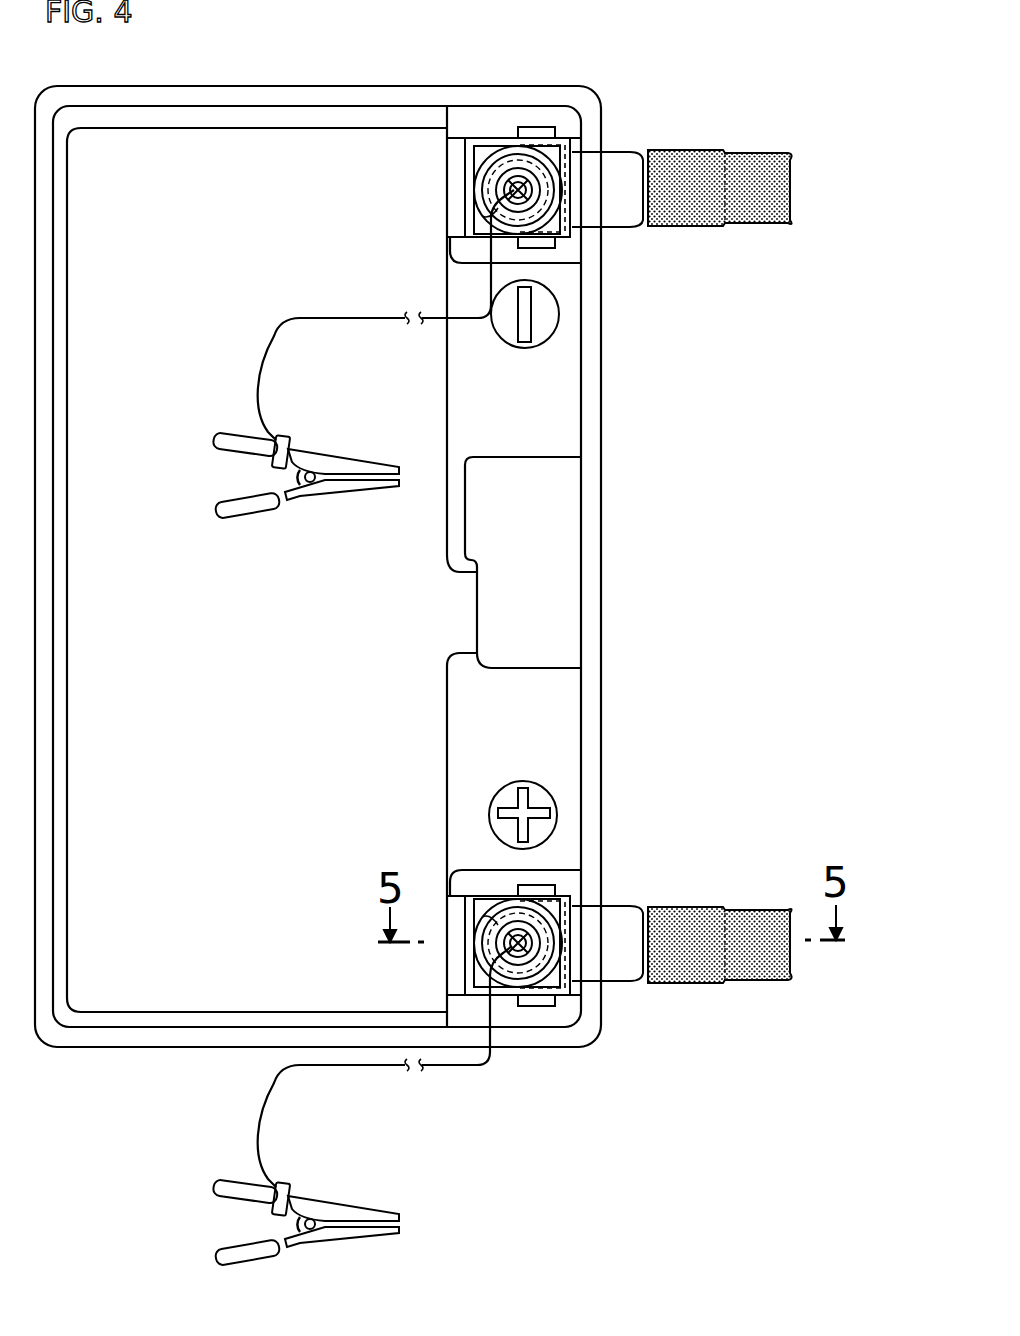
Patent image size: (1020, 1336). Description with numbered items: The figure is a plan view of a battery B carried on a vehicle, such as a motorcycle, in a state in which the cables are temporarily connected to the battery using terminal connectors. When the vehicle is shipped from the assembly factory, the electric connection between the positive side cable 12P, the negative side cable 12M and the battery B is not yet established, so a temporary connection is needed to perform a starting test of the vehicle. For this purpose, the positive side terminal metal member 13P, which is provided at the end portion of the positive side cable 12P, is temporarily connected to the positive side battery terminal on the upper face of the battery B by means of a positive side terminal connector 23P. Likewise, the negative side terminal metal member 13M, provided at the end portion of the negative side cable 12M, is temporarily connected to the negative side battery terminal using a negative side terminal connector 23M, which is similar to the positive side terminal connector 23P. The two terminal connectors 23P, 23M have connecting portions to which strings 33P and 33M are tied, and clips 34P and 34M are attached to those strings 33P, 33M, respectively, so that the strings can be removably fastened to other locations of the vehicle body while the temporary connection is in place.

The battery B is at (290, 607).
The negative side cable 12M is at (761, 160).
The positive side cable 12P is at (745, 910).
The negative side terminal metal member 13M is at (538, 137).
The positive side terminal metal member 13P is at (538, 887).
The negative side terminal connector 23M is at (491, 143).
The positive side terminal connector 23P is at (483, 892).
The string 33M is at (325, 316).
The string 33P is at (318, 1070).
The clip 34M is at (338, 487).
The clip 34P is at (332, 1210).